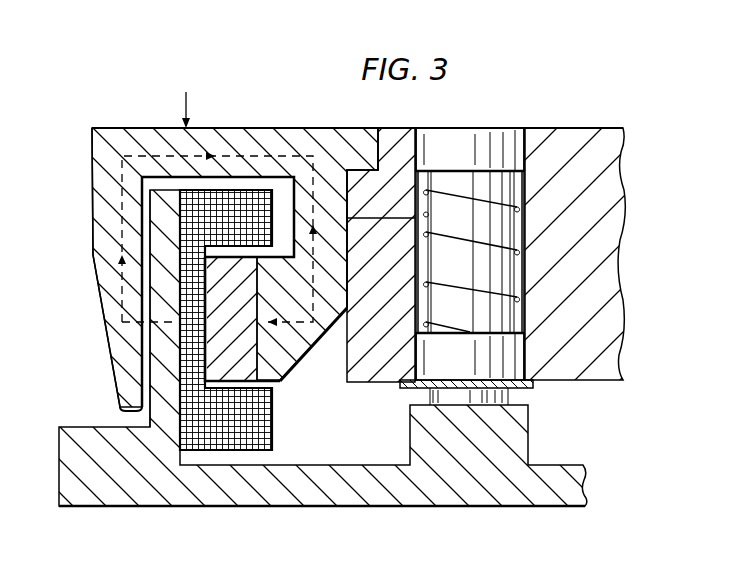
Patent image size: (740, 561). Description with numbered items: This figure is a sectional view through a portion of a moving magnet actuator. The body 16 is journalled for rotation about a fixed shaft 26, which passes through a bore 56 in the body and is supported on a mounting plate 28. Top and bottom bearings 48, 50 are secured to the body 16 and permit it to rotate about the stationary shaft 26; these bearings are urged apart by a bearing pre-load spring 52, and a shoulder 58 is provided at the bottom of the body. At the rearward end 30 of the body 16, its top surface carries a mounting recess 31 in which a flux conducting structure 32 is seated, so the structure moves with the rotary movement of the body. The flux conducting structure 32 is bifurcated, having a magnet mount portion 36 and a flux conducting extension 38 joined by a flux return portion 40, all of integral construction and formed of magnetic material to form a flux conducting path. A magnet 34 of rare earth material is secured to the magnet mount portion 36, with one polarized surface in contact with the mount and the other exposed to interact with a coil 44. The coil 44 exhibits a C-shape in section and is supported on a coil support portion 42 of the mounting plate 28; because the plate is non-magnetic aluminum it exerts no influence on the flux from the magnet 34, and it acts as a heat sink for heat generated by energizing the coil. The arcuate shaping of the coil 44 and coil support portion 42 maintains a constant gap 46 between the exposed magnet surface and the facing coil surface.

The body 16 is at (585, 128).
The fixed shaft 26 is at (440, 185).
The mounting plate 28 is at (330, 466).
The rearward end 30 is at (333, 195).
The mounting recess 31 is at (362, 170).
The flux conducting structure 32 is at (176, 98).
The magnet 34 is at (260, 258).
The magnet mount portion 36 is at (288, 367).
The flux conducting extension 38 is at (95, 277).
The flux return portion 40 is at (157, 128).
The coil support portion 42 is at (152, 372).
The coil 44 is at (255, 190).
The gap 46 is at (207, 287).
The top bearing 48 is at (487, 128).
The bottom bearing 50 is at (452, 347).
The bearing pre-load spring 52 is at (455, 291).
The bore 56 is at (428, 212).
The shoulder 58 is at (416, 393).